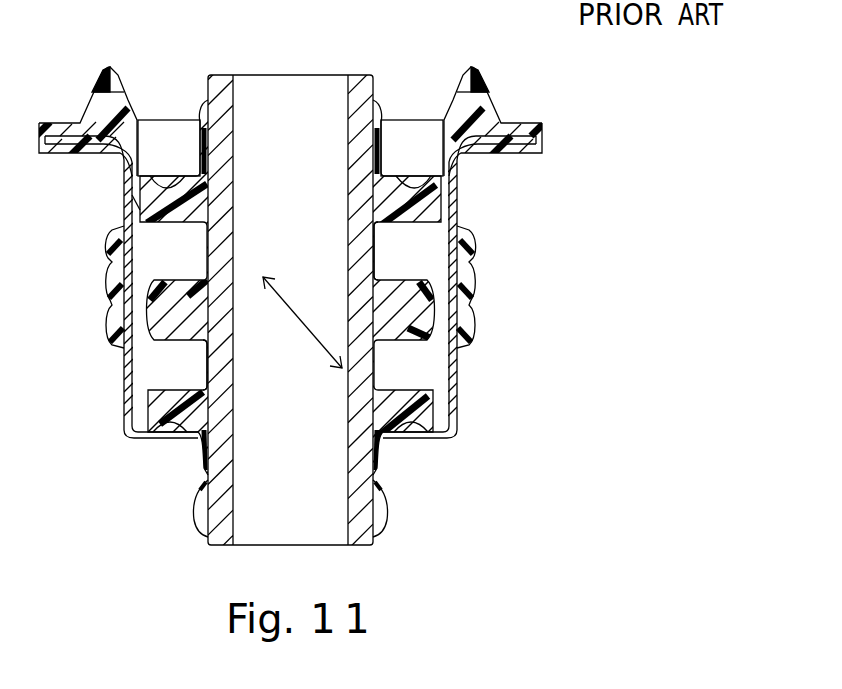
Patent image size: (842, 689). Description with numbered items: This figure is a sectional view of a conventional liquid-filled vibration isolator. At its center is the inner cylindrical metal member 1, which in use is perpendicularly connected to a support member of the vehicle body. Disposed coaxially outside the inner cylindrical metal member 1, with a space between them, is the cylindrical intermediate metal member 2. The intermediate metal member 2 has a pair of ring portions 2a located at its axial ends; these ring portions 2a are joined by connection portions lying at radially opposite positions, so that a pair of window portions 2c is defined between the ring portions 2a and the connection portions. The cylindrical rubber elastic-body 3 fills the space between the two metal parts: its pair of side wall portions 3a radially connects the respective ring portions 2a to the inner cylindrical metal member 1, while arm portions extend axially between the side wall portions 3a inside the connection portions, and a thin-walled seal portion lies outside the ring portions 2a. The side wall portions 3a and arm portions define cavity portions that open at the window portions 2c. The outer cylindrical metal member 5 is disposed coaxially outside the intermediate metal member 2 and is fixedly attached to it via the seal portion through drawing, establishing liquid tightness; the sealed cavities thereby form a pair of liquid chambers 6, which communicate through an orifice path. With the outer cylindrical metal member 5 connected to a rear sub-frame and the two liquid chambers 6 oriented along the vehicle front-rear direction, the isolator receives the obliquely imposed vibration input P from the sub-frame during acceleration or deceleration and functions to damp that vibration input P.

The inner cylindrical metal member 1 is at (360, 74).
The intermediate metal member 2 is at (147, 172).
The ring portions 2a is at (141, 201).
The window portions 2c is at (134, 256).
The cylindrical rubber elastic-body 3 is at (190, 176).
The side wall portions 3a is at (412, 197).
The outer cylindrical metal member 5 is at (457, 174).
The liquid chambers 6 is at (162, 370).
The vibration input P is at (302, 322).